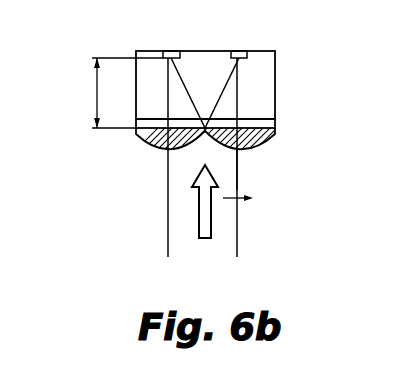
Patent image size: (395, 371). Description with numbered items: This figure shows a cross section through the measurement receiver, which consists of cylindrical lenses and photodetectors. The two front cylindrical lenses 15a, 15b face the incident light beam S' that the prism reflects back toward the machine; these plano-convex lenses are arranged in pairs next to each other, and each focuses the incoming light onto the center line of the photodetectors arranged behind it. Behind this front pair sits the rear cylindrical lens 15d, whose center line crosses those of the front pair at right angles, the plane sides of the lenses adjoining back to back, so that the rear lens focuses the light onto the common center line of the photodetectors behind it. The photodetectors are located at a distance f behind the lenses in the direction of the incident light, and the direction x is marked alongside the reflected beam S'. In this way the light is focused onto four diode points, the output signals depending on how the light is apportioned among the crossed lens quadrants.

The cylindrical lens 15a is at (143, 146).
The cylindrical lens 15b is at (273, 137).
The cylindrical lens 15d is at (256, 123).
The distance f is at (97, 95).
The light beam S' is at (253, 170).
The direction x is at (238, 206).